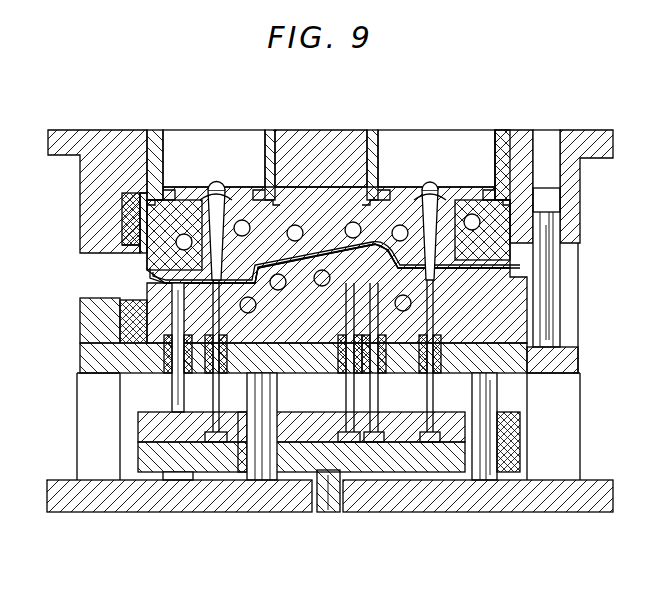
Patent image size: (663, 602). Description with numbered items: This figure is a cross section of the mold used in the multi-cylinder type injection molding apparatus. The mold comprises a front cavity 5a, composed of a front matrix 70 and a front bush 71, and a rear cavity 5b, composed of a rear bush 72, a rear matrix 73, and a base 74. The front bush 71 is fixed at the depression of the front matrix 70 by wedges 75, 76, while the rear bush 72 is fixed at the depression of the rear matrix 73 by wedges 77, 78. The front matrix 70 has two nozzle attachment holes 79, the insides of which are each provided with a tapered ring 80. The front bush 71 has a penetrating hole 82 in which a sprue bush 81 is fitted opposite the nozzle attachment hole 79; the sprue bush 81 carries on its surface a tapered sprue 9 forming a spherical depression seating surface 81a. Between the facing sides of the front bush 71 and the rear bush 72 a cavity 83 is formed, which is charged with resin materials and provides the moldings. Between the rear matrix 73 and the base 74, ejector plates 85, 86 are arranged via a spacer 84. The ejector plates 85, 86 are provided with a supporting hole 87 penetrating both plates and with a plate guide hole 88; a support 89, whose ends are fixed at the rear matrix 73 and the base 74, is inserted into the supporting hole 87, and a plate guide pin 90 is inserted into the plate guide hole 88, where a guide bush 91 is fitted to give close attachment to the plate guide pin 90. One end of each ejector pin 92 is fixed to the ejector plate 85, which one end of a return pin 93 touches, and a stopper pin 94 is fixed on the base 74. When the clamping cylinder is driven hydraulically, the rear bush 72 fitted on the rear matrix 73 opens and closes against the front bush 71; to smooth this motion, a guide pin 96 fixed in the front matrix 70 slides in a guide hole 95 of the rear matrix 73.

The front cavity 5a is at (70, 192).
The rear cavity 5b is at (62, 397).
The tapered sprue 9 is at (245, 196).
The front matrix 70 is at (129, 130).
The front bush 71 is at (328, 185).
The rear bush 72 is at (286, 346).
The rear matrix 73 is at (86, 363).
The base 74 is at (205, 512).
The wedge 75 is at (125, 238).
The wedge 76 is at (137, 250).
The wedge 77 is at (130, 335).
The wedge 78 is at (118, 320).
The nozzle attachment hole 79 is at (178, 130).
The tapered ring 80 is at (257, 130).
The sprue bush 81 is at (198, 190).
The spherical depression seating surface 81a is at (217, 186).
The penetrating hole 82 is at (197, 228).
The cavity 83 is at (306, 262).
The spacer 84 is at (85, 440).
The ejector plate 85 is at (140, 420).
The ejector plate 86 is at (140, 462).
The supporting hole 87 is at (252, 420).
The plate guide hole 88 is at (481, 475).
The support 89 is at (257, 480).
The plate guide pin 90 is at (475, 396).
The guide bush 91 is at (500, 412).
The ejector pin 92 is at (374, 389).
The return pin 93 is at (172, 392).
The stopper pin 94 is at (166, 480).
The guide hole 95 is at (556, 352).
The guide pin 96 is at (556, 264).